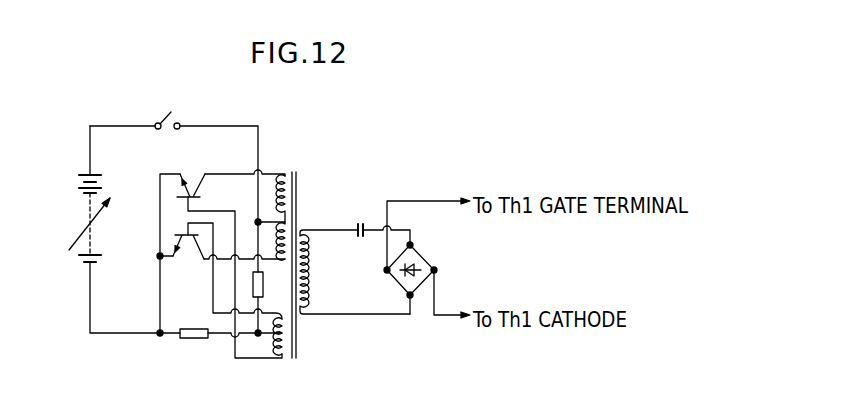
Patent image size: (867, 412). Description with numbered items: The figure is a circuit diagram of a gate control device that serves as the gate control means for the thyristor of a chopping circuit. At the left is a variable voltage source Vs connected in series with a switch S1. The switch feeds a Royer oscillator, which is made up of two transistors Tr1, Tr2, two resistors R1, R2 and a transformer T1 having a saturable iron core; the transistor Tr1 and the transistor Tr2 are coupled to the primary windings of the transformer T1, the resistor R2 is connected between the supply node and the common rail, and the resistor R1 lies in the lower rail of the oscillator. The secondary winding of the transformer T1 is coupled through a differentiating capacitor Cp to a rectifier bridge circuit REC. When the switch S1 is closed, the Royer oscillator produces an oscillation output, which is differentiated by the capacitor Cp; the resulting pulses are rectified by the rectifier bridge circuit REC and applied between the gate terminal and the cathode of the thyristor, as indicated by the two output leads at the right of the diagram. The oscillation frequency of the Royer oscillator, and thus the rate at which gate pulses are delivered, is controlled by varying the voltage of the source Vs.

The variable voltage source Vs is at (86, 219).
The switch S1 is at (166, 120).
The transistor Tr1 is at (186, 176).
The transistor Tr2 is at (186, 243).
The resistor R1 is at (197, 339).
The resistor R2 is at (263, 282).
The transformer T1 is at (296, 343).
The differentiating capacitor Cp is at (359, 238).
The rectifier bridge circuit REC is at (423, 263).